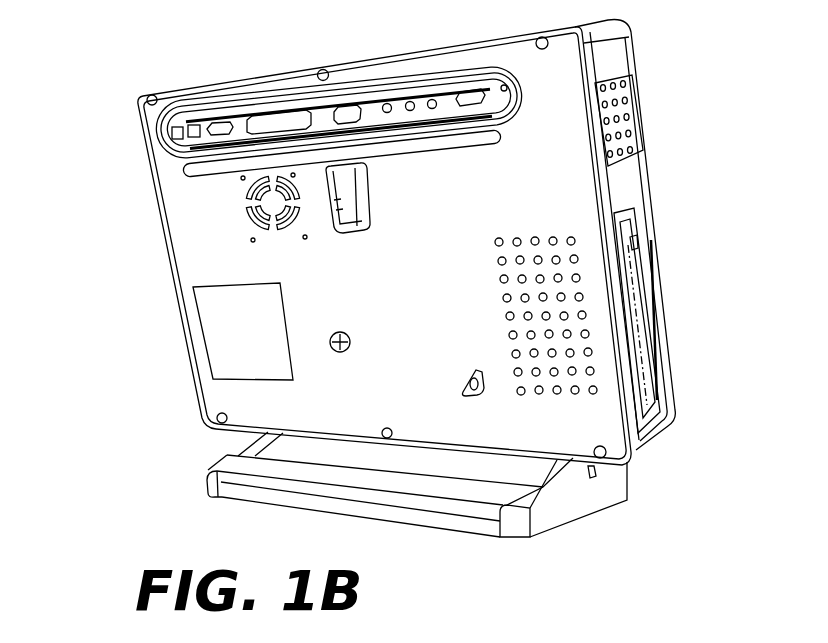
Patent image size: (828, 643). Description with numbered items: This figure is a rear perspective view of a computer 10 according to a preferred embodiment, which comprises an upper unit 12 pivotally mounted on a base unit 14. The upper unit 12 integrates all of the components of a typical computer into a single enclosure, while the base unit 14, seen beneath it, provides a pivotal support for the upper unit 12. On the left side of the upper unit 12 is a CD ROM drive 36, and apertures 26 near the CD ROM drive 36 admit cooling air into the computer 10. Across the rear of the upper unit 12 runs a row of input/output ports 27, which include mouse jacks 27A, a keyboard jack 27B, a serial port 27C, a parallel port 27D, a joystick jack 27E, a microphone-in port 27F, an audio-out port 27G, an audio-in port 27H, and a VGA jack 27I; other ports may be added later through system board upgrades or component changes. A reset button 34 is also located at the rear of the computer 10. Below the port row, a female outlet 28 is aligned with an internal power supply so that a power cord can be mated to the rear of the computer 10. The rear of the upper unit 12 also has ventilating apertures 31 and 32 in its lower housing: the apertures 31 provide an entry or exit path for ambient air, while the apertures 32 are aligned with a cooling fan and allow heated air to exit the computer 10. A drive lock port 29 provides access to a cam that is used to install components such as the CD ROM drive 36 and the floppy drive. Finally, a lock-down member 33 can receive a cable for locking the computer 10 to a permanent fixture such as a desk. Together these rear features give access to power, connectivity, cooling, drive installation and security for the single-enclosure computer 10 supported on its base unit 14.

The computer 10 is at (113, 72).
The upper unit 12 is at (197, 379).
The base unit 14 is at (578, 507).
The apertures 26 is at (629, 103).
The input/output ports 27 is at (503, 101).
The mouse jacks 27A is at (175, 133).
The keyboard jack 27B is at (191, 128).
The serial port 27C is at (218, 124).
The parallel port 27D is at (256, 120).
The joystick jack 27E is at (348, 106).
The microphone-in port 27F is at (387, 104).
The audio-out port 27G is at (408, 111).
The audio-in port 27H is at (433, 109).
The VGA jack 27I is at (463, 92).
The female outlet 28 is at (356, 228).
The drive lock port 29 is at (341, 352).
The ventilating apertures 31 is at (506, 299).
The ventilating apertures 32 is at (252, 223).
The lock-down member 33 is at (463, 394).
The reset button 34 is at (504, 86).
The CD ROM drive 36 is at (640, 337).